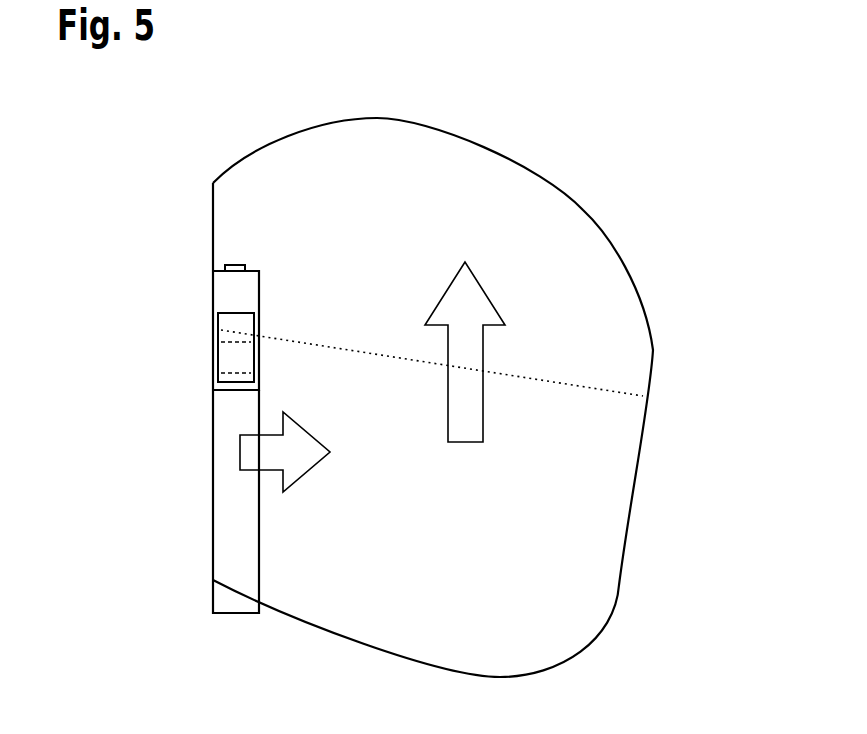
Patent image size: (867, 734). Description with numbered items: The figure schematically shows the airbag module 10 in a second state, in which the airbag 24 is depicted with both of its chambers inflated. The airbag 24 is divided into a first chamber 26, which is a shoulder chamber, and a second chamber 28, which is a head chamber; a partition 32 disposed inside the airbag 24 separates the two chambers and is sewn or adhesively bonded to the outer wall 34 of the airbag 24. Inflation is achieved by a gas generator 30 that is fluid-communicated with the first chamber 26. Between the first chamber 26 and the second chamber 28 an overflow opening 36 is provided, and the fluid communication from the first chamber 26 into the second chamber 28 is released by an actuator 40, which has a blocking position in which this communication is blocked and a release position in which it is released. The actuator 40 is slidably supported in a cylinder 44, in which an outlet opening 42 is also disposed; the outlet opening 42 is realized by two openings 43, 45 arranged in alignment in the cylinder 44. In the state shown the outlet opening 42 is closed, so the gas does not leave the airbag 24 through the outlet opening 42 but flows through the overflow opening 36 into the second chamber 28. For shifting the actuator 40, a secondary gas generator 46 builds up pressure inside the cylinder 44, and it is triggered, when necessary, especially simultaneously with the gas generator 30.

The airbag module 10 is at (666, 106).
The airbag 24 is at (382, 118).
The first chamber 26 is at (583, 528).
The second chamber 28 is at (535, 197).
The gas generator 30 is at (222, 543).
The partition 32 is at (602, 393).
The outer wall 34 is at (645, 292).
The overflow opening 36 is at (492, 356).
The actuator 40 is at (213, 322).
The outlet opening 42 is at (232, 378).
The opening 43 is at (213, 355).
The cylinder 44 is at (213, 283).
The opening 45 is at (259, 355).
The secondary gas generator 46 is at (234, 265).